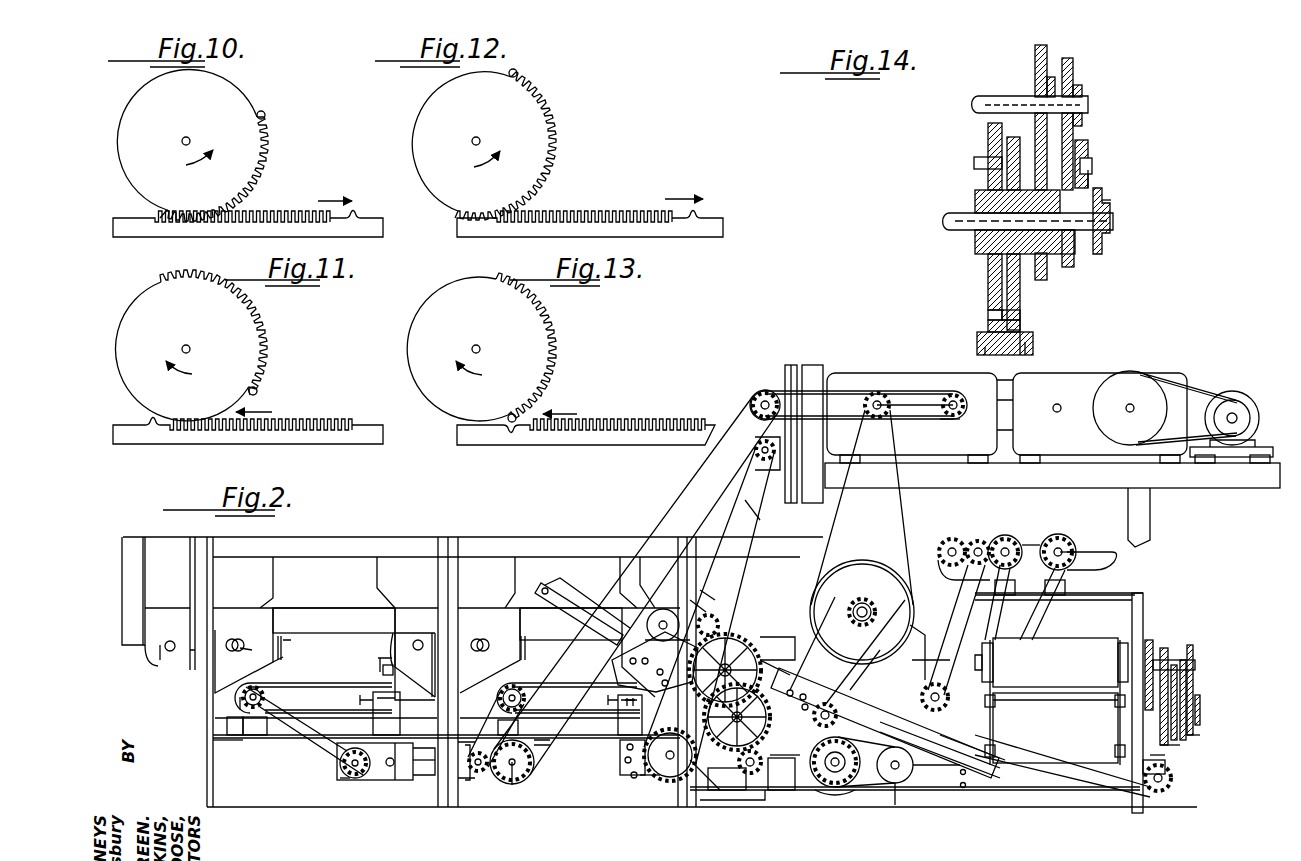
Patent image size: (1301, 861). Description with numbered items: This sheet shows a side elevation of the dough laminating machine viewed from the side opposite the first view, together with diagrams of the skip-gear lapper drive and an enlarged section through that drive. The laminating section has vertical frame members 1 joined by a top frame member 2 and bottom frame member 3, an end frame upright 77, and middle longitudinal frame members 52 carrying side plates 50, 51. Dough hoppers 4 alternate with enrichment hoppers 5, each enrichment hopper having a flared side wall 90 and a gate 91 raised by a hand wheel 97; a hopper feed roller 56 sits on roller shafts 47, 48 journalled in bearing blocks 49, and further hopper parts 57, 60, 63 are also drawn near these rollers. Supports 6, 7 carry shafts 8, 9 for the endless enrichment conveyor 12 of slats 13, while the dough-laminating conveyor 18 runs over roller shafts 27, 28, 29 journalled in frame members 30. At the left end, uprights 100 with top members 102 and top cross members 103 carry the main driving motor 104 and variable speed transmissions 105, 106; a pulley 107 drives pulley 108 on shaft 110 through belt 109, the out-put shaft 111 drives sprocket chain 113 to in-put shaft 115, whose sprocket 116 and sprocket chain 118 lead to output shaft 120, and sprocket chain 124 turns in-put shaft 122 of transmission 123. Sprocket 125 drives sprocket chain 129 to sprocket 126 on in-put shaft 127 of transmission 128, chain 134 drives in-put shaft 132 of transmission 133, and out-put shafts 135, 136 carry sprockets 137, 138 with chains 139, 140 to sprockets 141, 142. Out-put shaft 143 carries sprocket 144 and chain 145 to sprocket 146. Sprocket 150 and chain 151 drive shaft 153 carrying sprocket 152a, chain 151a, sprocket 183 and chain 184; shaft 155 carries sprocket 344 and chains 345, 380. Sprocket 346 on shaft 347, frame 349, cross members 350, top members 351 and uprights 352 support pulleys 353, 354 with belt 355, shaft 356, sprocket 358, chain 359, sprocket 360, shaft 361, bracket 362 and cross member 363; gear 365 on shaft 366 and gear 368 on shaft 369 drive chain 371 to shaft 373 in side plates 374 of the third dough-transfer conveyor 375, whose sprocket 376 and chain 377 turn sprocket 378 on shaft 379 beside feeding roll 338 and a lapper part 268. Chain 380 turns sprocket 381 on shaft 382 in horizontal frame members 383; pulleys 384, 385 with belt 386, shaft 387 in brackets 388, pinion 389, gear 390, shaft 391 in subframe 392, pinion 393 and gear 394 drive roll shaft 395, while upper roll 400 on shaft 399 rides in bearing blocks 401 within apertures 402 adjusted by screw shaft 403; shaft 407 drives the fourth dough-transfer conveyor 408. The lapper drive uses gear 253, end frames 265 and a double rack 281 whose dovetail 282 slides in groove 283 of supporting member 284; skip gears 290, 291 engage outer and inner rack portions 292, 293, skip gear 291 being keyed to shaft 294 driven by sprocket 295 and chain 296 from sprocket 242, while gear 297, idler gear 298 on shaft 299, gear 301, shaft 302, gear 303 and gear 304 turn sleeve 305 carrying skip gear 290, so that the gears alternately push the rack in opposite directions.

In FIG. 2, the vertical frame members 1 is at (222, 770).
In FIG. 2, the top frame member 2 is at (530, 545).
In FIG. 2, the bottom frame member 3 is at (228, 740).
In FIG. 2, the dough hopper 4 is at (236, 592).
In FIG. 2, the enrichment hopper 5 is at (346, 592).
In FIG. 2, the support 6 is at (383, 716).
In FIG. 2, the support 7 is at (245, 727).
In FIG. 2, the shaft 8 is at (398, 690).
In FIG. 2, the shaft 9 is at (250, 692).
In FIG. 2, the endless enrichment conveyor 12 is at (322, 684).
In FIG. 2, the slats 13 is at (330, 682).
In FIG. 2, the dough-laminating conveyor 18 is at (234, 726).
In FIG. 2, the shaft 27 is at (640, 780).
In FIG. 2, the roller shaft 28 is at (626, 750).
In FIG. 2, the roller shaft 29 is at (624, 764).
In FIG. 2, the frame members 30 is at (630, 770).
In FIG. 2, the roller shaft 47 is at (176, 632).
In FIG. 2, the roller shaft 48 is at (240, 648).
In FIG. 2, the bearing blocks 49 is at (172, 653).
In FIG. 2, the side plate 50 is at (268, 643).
In FIG. 2, the side plate 51 is at (180, 615).
In FIG. 2, the middle longitudinal frame members 52 is at (322, 612).
In FIG. 2, the hopper feed roller 56 is at (130, 655).
In FIG. 2, the roller arm 57 is at (244, 646).
In FIG. 2, the gate 60 is at (286, 644).
In FIG. 2, the gate lip 63 is at (283, 660).
In FIG. 2, the end frame upright 77 is at (135, 547).
In FIG. 2, the outwardly flared side wall 90 is at (470, 680).
In FIG. 2, the gate 91 is at (382, 675).
In FIG. 2, the hand wheel 97 is at (380, 660).
In FIG. 2, the vertical uprights 100 is at (968, 496).
In FIG. 2, the top members 102 is at (1238, 488).
In FIG. 2, the top cross members 103 is at (1028, 470).
In FIG. 2, the main driving motor 104 is at (1258, 412).
In FIG. 2, the variable speed transmission 105 is at (1095, 375).
In FIG. 2, the variable speed transmission 106 is at (925, 372).
In FIG. 2, the pulley 107 is at (1236, 410).
In FIG. 2, the pulley 108 is at (1138, 378).
In FIG. 2, the belt 109 is at (1203, 394).
In FIG. 2, the shaft 110 is at (1136, 398).
In FIG. 2, the out-put shaft 111 is at (1058, 403).
In FIG. 2, the sprocket chain 113 is at (1005, 380).
In FIG. 2, the in-put shaft 115 is at (957, 397).
In FIG. 2, the sprocket 116 is at (945, 418).
In FIG. 2, the sprocket chain 118 is at (950, 395).
In FIG. 2, the output shaft 120 is at (880, 398).
In FIG. 2, the in-put shaft 122 is at (768, 392).
In FIG. 2, the variable speed transmission 123 is at (770, 375).
In FIG. 2, the sprocket chain 124 is at (840, 383).
In FIG. 2, the sprocket 125 is at (750, 398).
In FIG. 2, the sprocket 126 is at (536, 756).
In FIG. 2, the in-put shaft 127 is at (514, 775).
In FIG. 2, the enrichment conveyor variable speed transmission 128 is at (534, 768).
In FIG. 2, the sprocket chain 129 is at (682, 497).
In FIG. 2, the in-put shaft 132 is at (390, 765).
In FIG. 2, the enrichment conveyor variable speed transmission 133 is at (356, 780).
In FIG. 2, the sprocket chain 134 is at (422, 780).
In FIG. 2, the out-put shaft 135 is at (478, 770).
In FIG. 2, the out-put shaft 136 is at (346, 775).
In FIG. 2, the sprocket 137 is at (453, 764).
In FIG. 2, the sprocket 138 is at (340, 768).
In FIG. 2, the sprocket chain 139 is at (498, 694).
In FIG. 2, the sprocket chain 140 is at (312, 738).
In FIG. 2, the sprocket 141 is at (488, 700).
In FIG. 2, the sprocket 142 is at (252, 702).
In FIG. 2, the out-put shaft 143 is at (757, 450).
In FIG. 2, the sprocket 144 is at (760, 460).
In FIG. 2, the sprocket chain 145 is at (758, 520).
In FIG. 2, the sprocket 146 is at (670, 777).
In FIG. 2, the sprocket 150 is at (890, 406).
In FIG. 2, the sprocket chain 151 is at (838, 503).
In FIG. 2, the chain 151a is at (840, 645).
In FIG. 2, the sprocket 152a is at (855, 550).
In FIG. 2, the shaft 153 is at (865, 586).
In FIG. 2, the shaft 155 is at (895, 785).
In FIG. 2, the sprocket 183 is at (855, 600).
In FIG. 2, the sprocket chain 184 is at (855, 608).
In FIG. 14, the sprocket 242 is at (1111, 200).
In FIG. 2, the gear 253 is at (1150, 644).
In FIG. 2, the end frames 265 is at (988, 718).
In FIG. 2, the housing 268 is at (1075, 700).
In FIG. 14, the double rack 281 is at (1020, 334).
In FIG. 2, the double rack 281 is at (1165, 758).
In FIG. 14, the dovetail 282 is at (985, 337).
In FIG. 14, the dovetailed groove 283 is at (990, 350).
In FIG. 14, the supporting member 284 is at (1030, 352).
In FIG. 11, the skip gear 290 is at (248, 348).
In FIG. 13, the skip gear 290 is at (542, 348).
In FIG. 14, the skip gear 290 is at (1020, 302).
In FIG. 10, the skip gear 291 is at (238, 105).
In FIG. 12, the skip gear 291 is at (436, 98).
In FIG. 14, the skip gear 291 is at (988, 298).
In FIG. 11, the outer rack portion 292 is at (295, 422).
In FIG. 13, the outer rack portion 292 is at (596, 424).
In FIG. 14, the outer rack portion 292 is at (1020, 321).
In FIG. 10, the inner rack portion 293 is at (270, 215).
In FIG. 12, the inner rack portion 293 is at (597, 215).
In FIG. 14, the inner rack portion 293 is at (990, 316).
In FIG. 10, the shaft 294 is at (188, 139).
In FIG. 11, the shaft 294 is at (197, 333).
In FIG. 12, the shaft 294 is at (482, 133).
In FIG. 13, the shaft 294 is at (490, 333).
In FIG. 14, the shaft 294 is at (946, 219).
In FIG. 2, the sprocket 295 is at (1195, 716).
In FIG. 14, the sprocket chain 296 is at (1102, 190).
In FIG. 2, the sprocket chain 296 is at (1190, 645).
In FIG. 14, the gear 297 is at (1075, 258).
In FIG. 2, the gear 297 is at (1190, 735).
In FIG. 14, the idler gear 298 is at (1082, 163).
In FIG. 2, the idler gear 298 is at (1195, 698).
In FIG. 14, the shaft 299 is at (974, 160).
In FIG. 14, the gear 301 is at (1073, 60).
In FIG. 2, the gear 301 is at (1193, 665).
In FIG. 14, the shaft 302 is at (1088, 104).
In FIG. 14, the gear 303 is at (1047, 48).
In FIG. 2, the gear 303 is at (1165, 662).
In FIG. 14, the gear 304 is at (1093, 178).
In FIG. 2, the gear 304 is at (1160, 744).
In FIG. 14, the sleeve 305 is at (975, 238).
In FIG. 2, the second feeding roll 338 is at (1088, 645).
In FIG. 2, the sprocket 344 is at (925, 780).
In FIG. 2, the sprocket chain 345 is at (1030, 620).
In FIG. 2, the sprocket 346 is at (1068, 540).
In FIG. 2, the shaft 347 is at (1068, 552).
In FIG. 2, the frame 349 is at (1118, 560).
In FIG. 2, the cross members 350 is at (1070, 595).
In FIG. 2, the top members 351 is at (1130, 593).
In FIG. 2, the vertical frame uprights 352 is at (1143, 620).
In FIG. 2, the pulley 353 is at (1062, 535).
In FIG. 2, the pulley 354 is at (1022, 520).
In FIG. 2, the belt 355 is at (1030, 538).
In FIG. 2, the shaft 356 is at (1005, 535).
In FIG. 2, the sprocket 358 is at (1030, 581).
In FIG. 2, the sprocket chain 359 is at (992, 620).
In FIG. 2, the sprocket 360 is at (922, 668).
In FIG. 2, the shaft 361 is at (922, 688).
In FIG. 2, the supporting bracket 362 is at (935, 722).
In FIG. 2, the frame cross member 363 is at (960, 730).
In FIG. 2, the gear 365 is at (970, 540).
In FIG. 2, the shaft 366 is at (945, 598).
In FIG. 2, the gear 368 is at (945, 540).
In FIG. 2, the shaft 369 is at (940, 552).
In FIG. 2, the sprocket chain 371 is at (918, 622).
In FIG. 2, the shaft 373 is at (872, 648).
In FIG. 2, the side plates 374 is at (805, 682).
In FIG. 2, the third dough-transfer conveyor 375 is at (770, 665).
In FIG. 2, the sprocket 376 is at (814, 716).
In FIG. 2, the sprocket chain 377 is at (1055, 755).
In FIG. 2, the sprocket 378 is at (1168, 774).
In FIG. 2, the shaft 379 is at (1160, 782).
In FIG. 2, the sprocket chain 380 is at (893, 785).
In FIG. 2, the sprocket 381 is at (846, 787).
In FIG. 2, the shaft 382 is at (845, 763).
In FIG. 2, the horizontal frame members 383 is at (958, 795).
In FIG. 2, the pulley 384 is at (830, 790).
In FIG. 2, the pulley 385 is at (750, 775).
In FIG. 2, the belt 386 is at (800, 745).
In FIG. 2, the shaft 387 is at (727, 779).
In FIG. 2, the brackets 388 is at (720, 790).
In FIG. 2, the pinion 389 is at (775, 778).
In FIG. 2, the gear 390 is at (698, 790).
In FIG. 2, the shaft 391 is at (712, 712).
In FIG. 2, the subframe 392 is at (772, 770).
In FIG. 2, the pinion 393 is at (670, 755).
In FIG. 2, the gear 394 is at (777, 637).
In FIG. 2, the roll shaft 395 is at (727, 660).
In FIG. 2, the upper consolidating roll shaft 399 is at (705, 622).
In FIG. 2, the upper consolidating roll 400 is at (695, 605).
In FIG. 2, the bearing blocks 401 is at (625, 652).
In FIG. 2, the rectangular apertures 402 is at (705, 590).
In FIG. 2, the screw shaft 403 is at (662, 616).
In FIG. 2, the shaft 407 is at (600, 636).
In FIG. 2, the fourth dough-transfer conveyor 408 is at (582, 590).